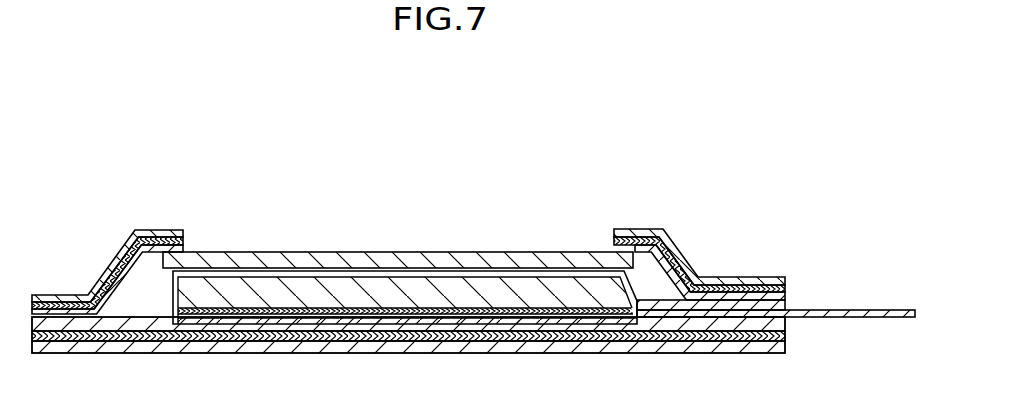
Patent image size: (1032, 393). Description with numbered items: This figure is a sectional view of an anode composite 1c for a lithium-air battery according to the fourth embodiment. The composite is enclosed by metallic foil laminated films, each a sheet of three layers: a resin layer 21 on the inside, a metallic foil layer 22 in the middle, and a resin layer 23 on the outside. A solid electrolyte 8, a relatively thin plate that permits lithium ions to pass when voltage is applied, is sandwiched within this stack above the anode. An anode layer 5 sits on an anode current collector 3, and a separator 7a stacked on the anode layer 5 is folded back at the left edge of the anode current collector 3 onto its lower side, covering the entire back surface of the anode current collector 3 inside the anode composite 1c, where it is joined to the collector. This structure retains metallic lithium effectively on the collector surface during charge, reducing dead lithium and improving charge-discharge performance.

The anode composite 1c is at (752, 163).
The anode current collector 3 is at (849, 310).
The anode layer 5 is at (515, 292).
The separator 7a is at (295, 277).
The solid electrolyte 8 is at (383, 258).
The resin layer 21 is at (183, 248).
The metallic foil layer 22 is at (163, 237).
The resin layer 23 is at (125, 250).